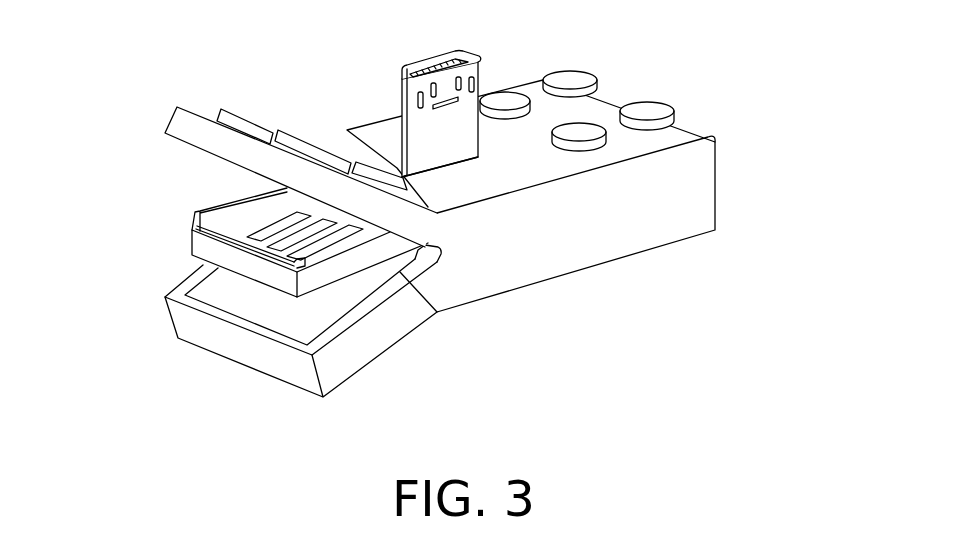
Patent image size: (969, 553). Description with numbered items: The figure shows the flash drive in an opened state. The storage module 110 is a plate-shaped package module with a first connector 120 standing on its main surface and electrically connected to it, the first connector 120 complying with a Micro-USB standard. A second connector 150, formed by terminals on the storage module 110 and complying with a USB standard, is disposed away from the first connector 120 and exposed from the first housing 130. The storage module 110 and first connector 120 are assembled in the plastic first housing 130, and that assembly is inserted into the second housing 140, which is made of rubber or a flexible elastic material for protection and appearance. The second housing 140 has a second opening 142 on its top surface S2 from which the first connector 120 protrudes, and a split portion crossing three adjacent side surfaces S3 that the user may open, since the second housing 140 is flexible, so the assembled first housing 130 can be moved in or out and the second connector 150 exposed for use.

The storage module 110 is at (352, 225).
The first connector 120 is at (417, 117).
The first housing 130 is at (291, 333).
The second housing 140 is at (560, 212).
The second opening 142 is at (448, 158).
The second connector 150 is at (261, 222).
The top surface S2 is at (466, 187).
The side surface S3 is at (178, 278).